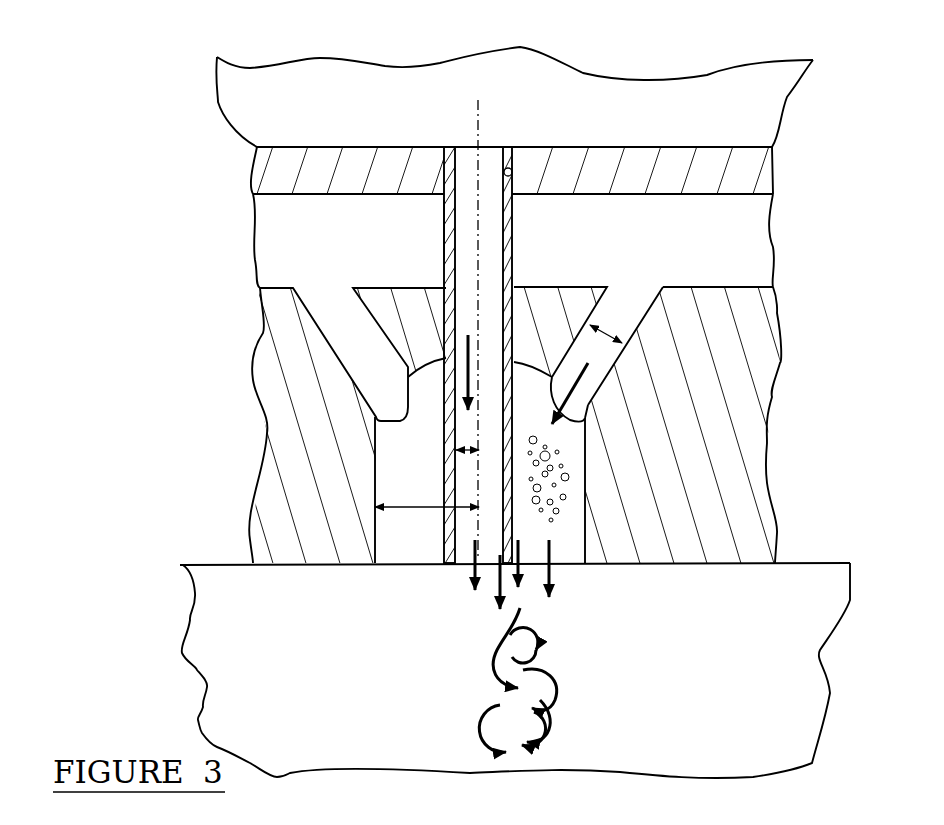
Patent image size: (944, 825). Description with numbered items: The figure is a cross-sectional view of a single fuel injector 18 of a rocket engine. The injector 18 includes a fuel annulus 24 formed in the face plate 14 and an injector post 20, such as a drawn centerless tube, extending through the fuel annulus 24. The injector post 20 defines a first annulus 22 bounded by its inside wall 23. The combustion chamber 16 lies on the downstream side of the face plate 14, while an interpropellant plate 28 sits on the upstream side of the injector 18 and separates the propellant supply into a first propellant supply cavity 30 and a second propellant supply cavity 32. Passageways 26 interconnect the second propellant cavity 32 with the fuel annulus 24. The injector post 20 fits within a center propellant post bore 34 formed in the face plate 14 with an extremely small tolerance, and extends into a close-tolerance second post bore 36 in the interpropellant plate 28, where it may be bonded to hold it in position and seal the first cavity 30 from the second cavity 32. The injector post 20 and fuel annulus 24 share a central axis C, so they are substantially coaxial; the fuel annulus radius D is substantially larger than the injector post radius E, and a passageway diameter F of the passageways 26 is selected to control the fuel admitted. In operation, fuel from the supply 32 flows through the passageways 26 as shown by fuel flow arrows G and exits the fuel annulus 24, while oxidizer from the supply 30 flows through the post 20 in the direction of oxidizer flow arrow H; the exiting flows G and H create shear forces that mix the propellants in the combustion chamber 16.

The face plate 14 is at (743, 530).
The combustion chamber 16 is at (655, 702).
The fuel injector 18 is at (547, 88).
The injector post 20 is at (444, 147).
The first annulus 22 is at (445, 229).
The inside wall 23 is at (503, 187).
The fuel annulus 24 is at (586, 546).
The passageways 26 is at (633, 327).
The interpropellant plate 28 is at (710, 167).
The first propellant supply cavity 30 is at (655, 122).
The second propellant supply cavity 32 is at (655, 237).
The center propellant post bore 34 is at (447, 308).
The second post bore 36 is at (512, 170).
The central axis C is at (478, 100).
The fuel annulus radius D is at (418, 507).
The injector post radius E is at (465, 452).
The passageway diameter F is at (625, 330).
The fuel flow arrows G is at (567, 414).
The oxidizer flow arrow H is at (467, 350).